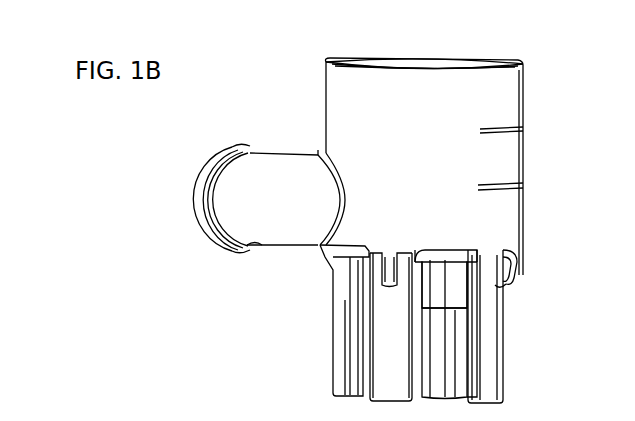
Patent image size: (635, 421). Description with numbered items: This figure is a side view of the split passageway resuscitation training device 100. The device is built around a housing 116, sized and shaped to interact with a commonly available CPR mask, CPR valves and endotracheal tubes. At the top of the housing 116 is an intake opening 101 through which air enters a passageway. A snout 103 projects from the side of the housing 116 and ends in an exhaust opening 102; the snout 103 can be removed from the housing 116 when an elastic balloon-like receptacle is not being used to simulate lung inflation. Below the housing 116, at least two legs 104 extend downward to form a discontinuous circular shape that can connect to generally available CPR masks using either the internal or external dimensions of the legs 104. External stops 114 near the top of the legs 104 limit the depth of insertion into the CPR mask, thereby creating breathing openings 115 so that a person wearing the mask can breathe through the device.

The split passageway resuscitation training device 100 is at (546, 72).
The intake opening 101 is at (419, 41).
The exhaust opening 102 is at (173, 192).
The snout 103 is at (277, 205).
The legs 104 is at (482, 357).
The external stops 114 is at (517, 273).
The breathing openings 115 is at (463, 266).
The housing 116 is at (362, 118).